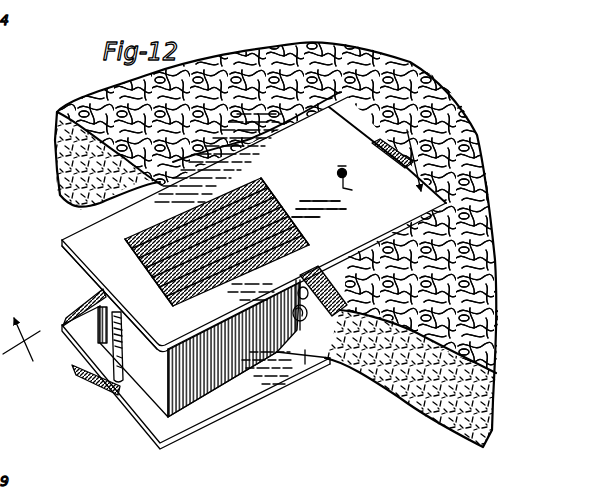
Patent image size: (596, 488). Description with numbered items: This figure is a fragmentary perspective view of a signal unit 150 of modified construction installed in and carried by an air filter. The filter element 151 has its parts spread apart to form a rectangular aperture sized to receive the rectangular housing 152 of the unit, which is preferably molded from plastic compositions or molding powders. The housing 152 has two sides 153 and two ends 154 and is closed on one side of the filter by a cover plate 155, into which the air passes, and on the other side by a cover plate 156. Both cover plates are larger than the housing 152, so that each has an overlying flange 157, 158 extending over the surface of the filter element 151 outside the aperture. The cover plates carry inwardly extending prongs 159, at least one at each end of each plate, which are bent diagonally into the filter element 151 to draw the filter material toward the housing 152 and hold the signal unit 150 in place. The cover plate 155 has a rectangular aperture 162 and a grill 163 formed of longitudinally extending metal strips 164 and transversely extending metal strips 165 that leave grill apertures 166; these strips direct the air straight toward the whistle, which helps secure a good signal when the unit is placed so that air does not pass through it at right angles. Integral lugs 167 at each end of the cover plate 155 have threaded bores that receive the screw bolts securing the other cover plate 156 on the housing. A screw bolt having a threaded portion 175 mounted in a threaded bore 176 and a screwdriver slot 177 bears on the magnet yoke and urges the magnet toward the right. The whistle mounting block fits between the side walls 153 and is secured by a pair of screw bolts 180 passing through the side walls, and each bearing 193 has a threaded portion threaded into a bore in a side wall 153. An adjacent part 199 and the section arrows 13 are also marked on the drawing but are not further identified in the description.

The section line 13- 13 is at (226, 253).
The signal unit 150 is at (416, 196).
The filter element 151 is at (240, 70).
The rectangular housing 152 is at (231, 380).
The sides 153 is at (197, 404).
The ends 154 is at (157, 384).
The cover plate 155 is at (78, 236).
The cover plate 156 is at (276, 388).
The overlying flange 157 is at (72, 257).
The overlying flange 158 is at (155, 418).
The prongs 159 is at (190, 194).
The rectangular aperture 162 is at (170, 214).
The grill 163 is at (148, 260).
The longitudinally extending metal strips 164 is at (305, 219).
The transversely extending metal strips 165 is at (325, 203).
The grill apertures 166 is at (264, 184).
The integral lugs 167 is at (98, 336).
The threaded portion 175 is at (347, 174).
The threaded bore 176 is at (325, 159).
The slot 177 is at (340, 181).
The screw bolts 180 is at (286, 364).
The bearing 193 is at (303, 310).
The pivot 199 is at (302, 309).